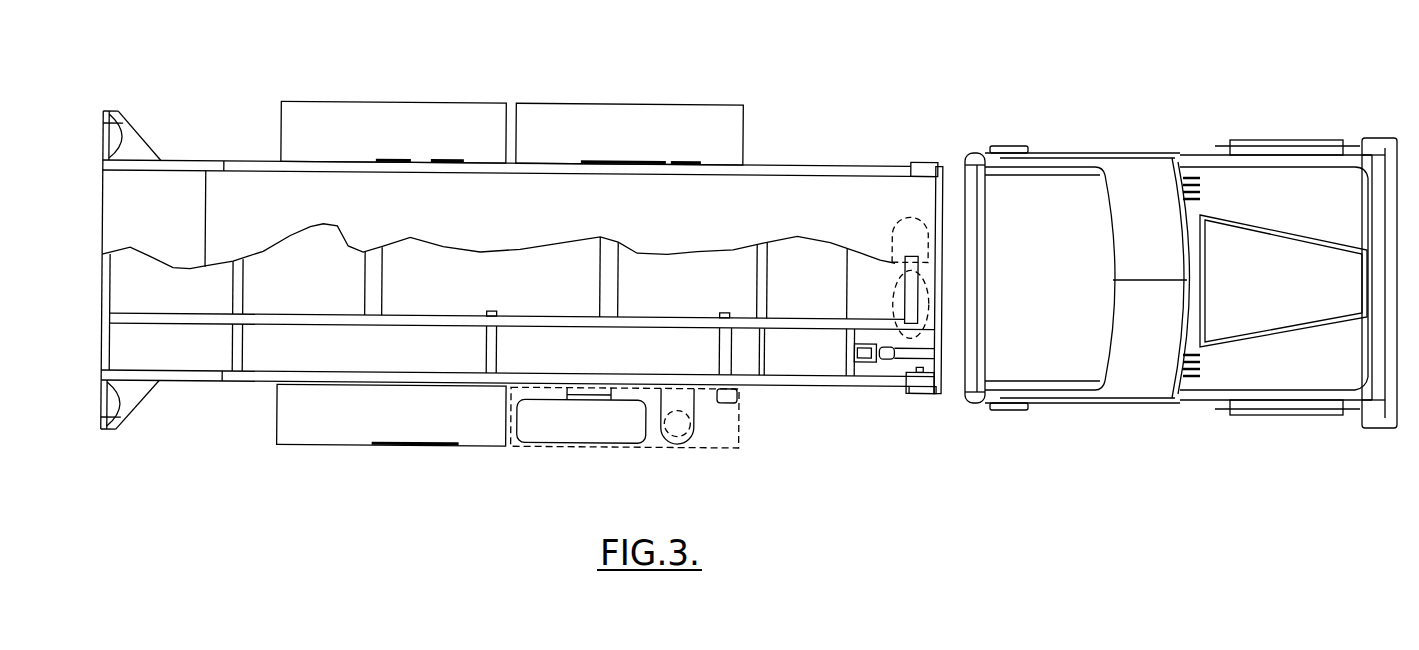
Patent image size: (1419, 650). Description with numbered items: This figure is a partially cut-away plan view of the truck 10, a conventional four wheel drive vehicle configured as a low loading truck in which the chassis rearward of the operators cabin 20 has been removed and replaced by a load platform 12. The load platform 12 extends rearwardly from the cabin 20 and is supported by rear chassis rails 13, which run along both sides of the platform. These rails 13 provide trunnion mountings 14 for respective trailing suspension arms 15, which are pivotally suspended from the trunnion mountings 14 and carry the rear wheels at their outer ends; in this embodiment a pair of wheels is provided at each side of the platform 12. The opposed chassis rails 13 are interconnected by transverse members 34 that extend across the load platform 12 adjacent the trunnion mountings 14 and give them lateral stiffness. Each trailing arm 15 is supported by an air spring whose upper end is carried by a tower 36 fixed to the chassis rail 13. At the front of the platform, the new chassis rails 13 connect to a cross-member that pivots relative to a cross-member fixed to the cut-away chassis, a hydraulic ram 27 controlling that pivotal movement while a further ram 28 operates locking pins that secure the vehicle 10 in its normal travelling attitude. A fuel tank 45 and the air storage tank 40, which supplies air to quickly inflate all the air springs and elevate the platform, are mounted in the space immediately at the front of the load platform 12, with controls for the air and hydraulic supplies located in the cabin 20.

The truck 10 is at (1212, 108).
The load platform 12 is at (790, 132).
The rear chassis rails 13 is at (867, 164).
The trunnion mountings 14 is at (495, 162).
The trailing suspension arms 15 is at (653, 386).
The operators cabin 20 is at (1330, 280).
The hydraulic ram 27 is at (902, 348).
The further ram 28 is at (925, 360).
The transverse members 34 is at (383, 275).
The tower 36 is at (673, 395).
The air storage tank 40 is at (908, 306).
The fuel tank 45 is at (910, 236).